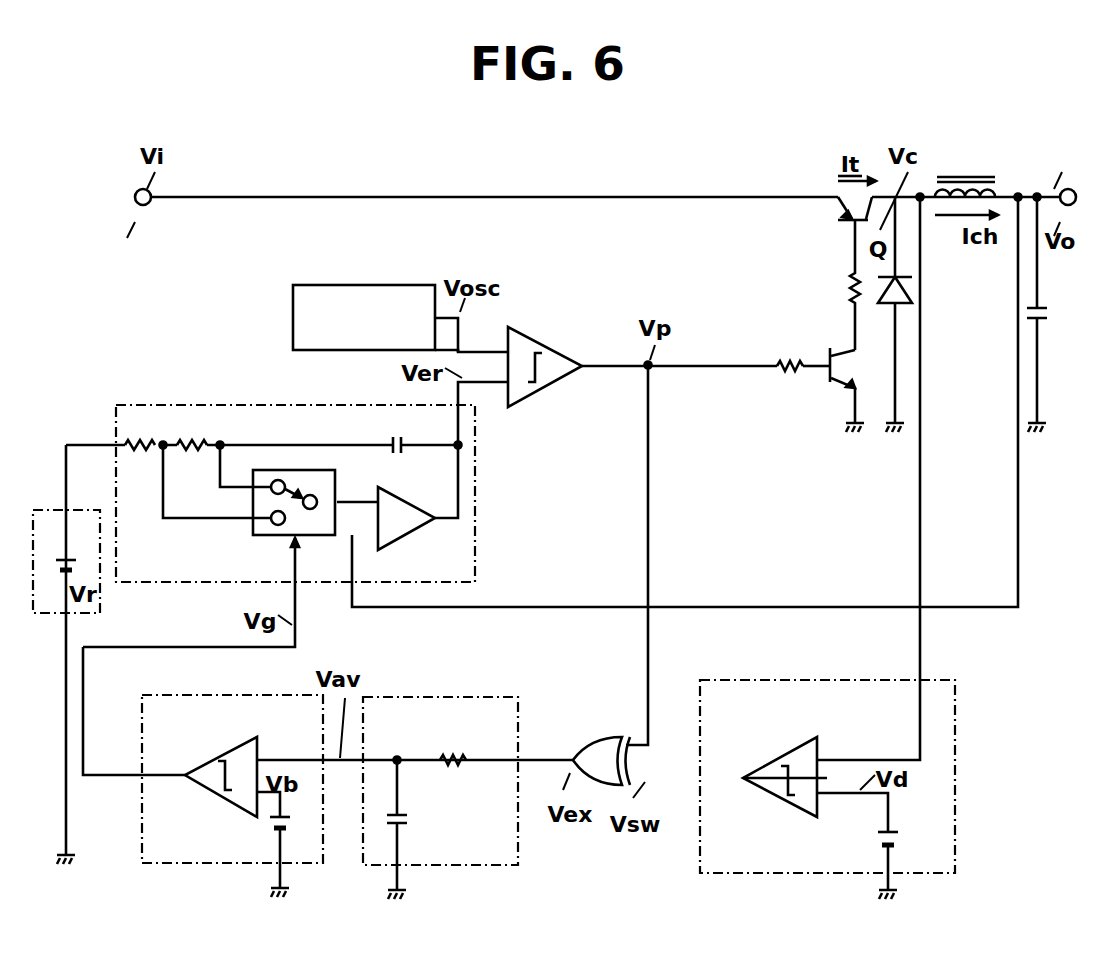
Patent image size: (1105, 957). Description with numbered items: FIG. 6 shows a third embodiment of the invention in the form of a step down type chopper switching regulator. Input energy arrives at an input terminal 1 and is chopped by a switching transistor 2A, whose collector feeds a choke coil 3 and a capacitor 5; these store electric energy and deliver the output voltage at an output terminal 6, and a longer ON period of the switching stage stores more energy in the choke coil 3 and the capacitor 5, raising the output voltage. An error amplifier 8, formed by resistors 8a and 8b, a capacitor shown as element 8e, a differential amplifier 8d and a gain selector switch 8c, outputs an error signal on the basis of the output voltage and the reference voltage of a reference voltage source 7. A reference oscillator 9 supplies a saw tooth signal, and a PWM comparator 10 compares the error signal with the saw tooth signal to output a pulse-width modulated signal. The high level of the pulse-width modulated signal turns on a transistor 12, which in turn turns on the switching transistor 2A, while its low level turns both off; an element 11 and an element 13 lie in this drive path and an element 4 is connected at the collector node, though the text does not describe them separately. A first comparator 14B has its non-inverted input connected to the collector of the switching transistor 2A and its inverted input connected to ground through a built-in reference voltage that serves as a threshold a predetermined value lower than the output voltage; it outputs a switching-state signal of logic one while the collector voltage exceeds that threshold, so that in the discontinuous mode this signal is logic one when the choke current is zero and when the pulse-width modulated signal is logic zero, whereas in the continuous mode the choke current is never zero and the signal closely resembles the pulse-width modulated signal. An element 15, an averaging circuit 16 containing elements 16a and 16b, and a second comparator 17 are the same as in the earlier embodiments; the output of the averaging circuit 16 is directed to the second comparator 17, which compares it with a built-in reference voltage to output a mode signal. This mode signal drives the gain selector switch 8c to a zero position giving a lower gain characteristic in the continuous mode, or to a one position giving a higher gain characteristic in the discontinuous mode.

The input terminal 1 is at (139, 222).
The switching transistor 2A is at (846, 208).
The choke coil 3 is at (970, 167).
The flywheel diode 4 is at (890, 300).
The capacitor 5 is at (1050, 310).
The output terminal 6 is at (1064, 173).
The reference voltage source 7 is at (82, 507).
The error amplifier 8 is at (113, 413).
The resistor 8a is at (146, 413).
The resistor 8b is at (196, 413).
The gain selector switch 8c is at (322, 470).
The differential amplifier 8d is at (418, 510).
The capacitor C1 8e is at (396, 433).
The reference oscillator 9 is at (386, 282).
The PWM comparator 10 is at (556, 347).
The base resistor 11 is at (790, 377).
The transistor 12 is at (840, 350).
The resistor 13 is at (844, 287).
The first comparator 14B is at (958, 806).
The exclusive OR gate 15 is at (612, 735).
The averaging circuit 16 is at (430, 695).
The averaging resistor 16a is at (455, 770).
The averaging capacitor 16b is at (413, 820).
The second comparator 17 is at (140, 805).